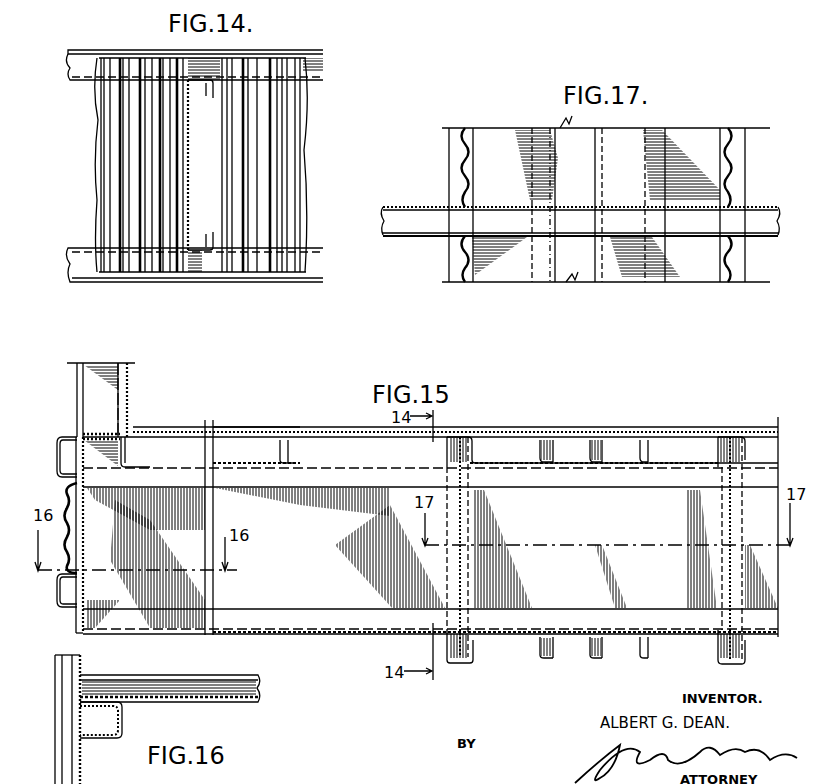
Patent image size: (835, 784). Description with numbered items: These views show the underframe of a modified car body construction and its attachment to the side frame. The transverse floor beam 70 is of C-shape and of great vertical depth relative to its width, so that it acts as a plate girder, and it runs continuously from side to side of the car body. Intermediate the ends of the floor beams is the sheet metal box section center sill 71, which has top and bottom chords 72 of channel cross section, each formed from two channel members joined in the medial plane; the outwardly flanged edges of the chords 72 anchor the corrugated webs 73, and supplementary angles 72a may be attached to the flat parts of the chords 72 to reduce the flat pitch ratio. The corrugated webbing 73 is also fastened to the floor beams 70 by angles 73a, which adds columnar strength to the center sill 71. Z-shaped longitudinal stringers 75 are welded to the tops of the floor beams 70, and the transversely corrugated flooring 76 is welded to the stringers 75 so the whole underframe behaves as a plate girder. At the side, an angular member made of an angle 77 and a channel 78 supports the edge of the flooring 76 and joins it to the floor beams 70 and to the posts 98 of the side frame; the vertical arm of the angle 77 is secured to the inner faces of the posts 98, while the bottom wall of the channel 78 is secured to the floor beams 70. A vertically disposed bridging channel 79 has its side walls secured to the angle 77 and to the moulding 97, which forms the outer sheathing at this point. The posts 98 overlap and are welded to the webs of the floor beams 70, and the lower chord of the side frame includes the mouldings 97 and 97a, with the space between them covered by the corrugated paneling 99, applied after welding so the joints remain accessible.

In FIG. 14, the transverse floor beam 70 is at (191, 128).
In FIG. 17, the transverse floor beam 70 is at (413, 231).
In FIG. 15, the transverse floor beam 70 is at (323, 599).
In FIG. 16, the transverse floor beam 70 is at (227, 706).
In FIG. 15, the center sill 71 is at (628, 450).
In FIG. 14, the top and bottom chords 72 is at (79, 76).
In FIG. 17, the top and bottom chords 72 is at (706, 280).
In FIG. 15, the top and bottom chords 72 is at (483, 458).
In FIG. 17, the supplementary angles 72a is at (552, 282).
In FIG. 15, the supplementary angles 72a is at (553, 448).
In FIG. 14, the corrugated web 73 is at (290, 143).
In FIG. 17, the corrugated web 73 is at (463, 152).
In FIG. 15, the corrugated web 73 is at (447, 452).
In FIG. 17, the angles 73a is at (470, 200).
In FIG. 15, the longitudinal stringers 75 is at (290, 451).
In FIG. 15, the transversely corrugated flooring 76 is at (292, 432).
In FIG. 15, the angle 77 is at (126, 408).
In FIG. 15, the channel 78 is at (133, 452).
In FIG. 15, the channel 79 is at (110, 432).
In FIG. 15, the moulding 97 is at (56, 445).
In FIG. 15, the moulding 97a is at (57, 600).
In FIG. 16, the moulding 97a is at (60, 683).
In FIG. 15, the post 98 is at (112, 372).
In FIG. 16, the post 98 is at (118, 740).
In FIG. 15, the corrugated paneling 99 is at (67, 493).